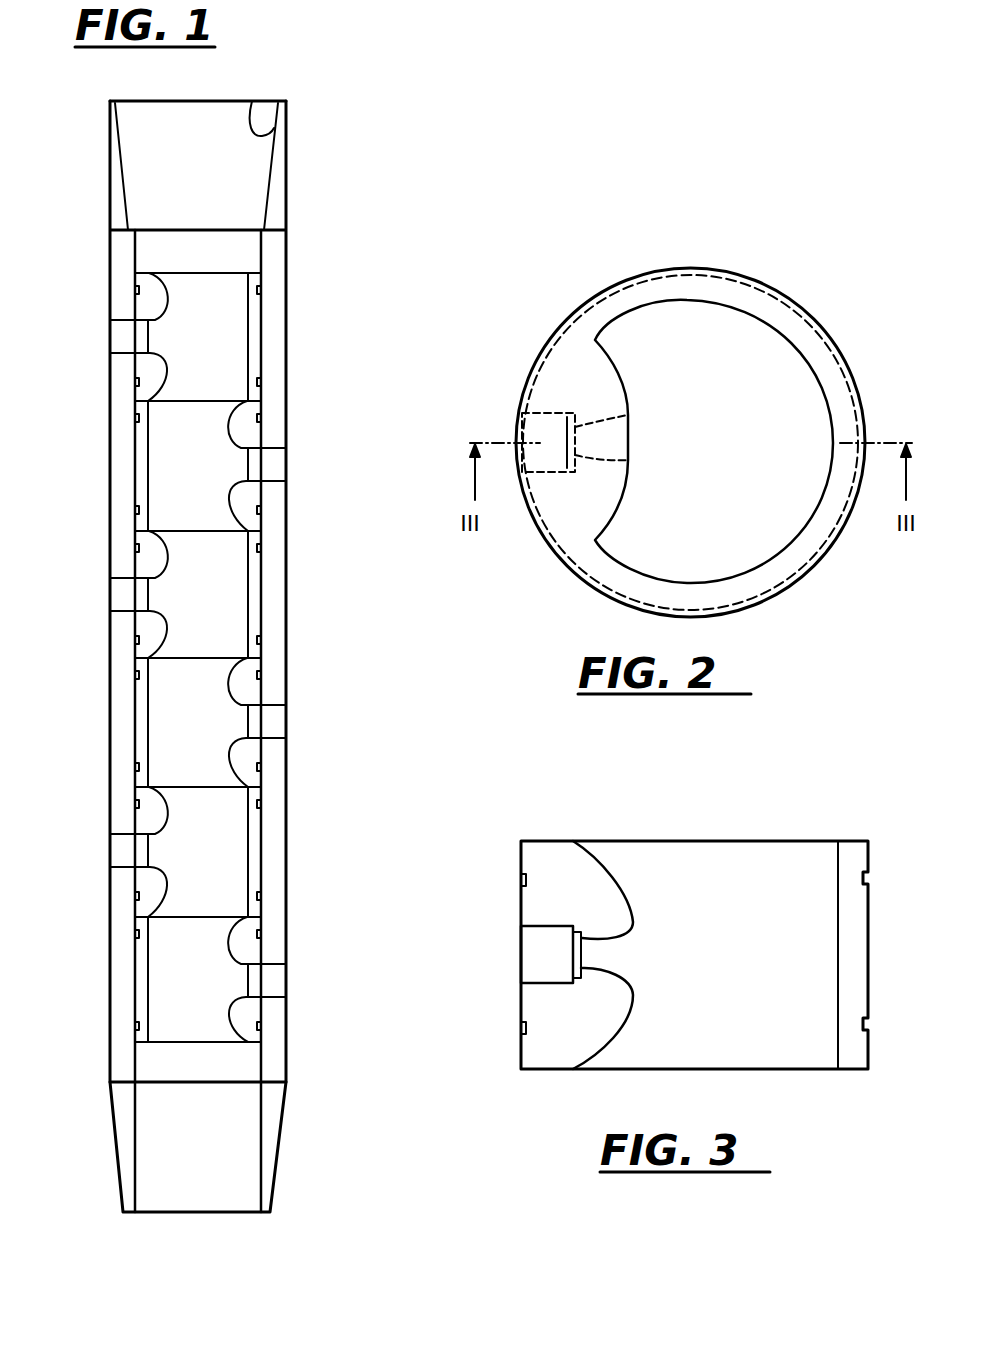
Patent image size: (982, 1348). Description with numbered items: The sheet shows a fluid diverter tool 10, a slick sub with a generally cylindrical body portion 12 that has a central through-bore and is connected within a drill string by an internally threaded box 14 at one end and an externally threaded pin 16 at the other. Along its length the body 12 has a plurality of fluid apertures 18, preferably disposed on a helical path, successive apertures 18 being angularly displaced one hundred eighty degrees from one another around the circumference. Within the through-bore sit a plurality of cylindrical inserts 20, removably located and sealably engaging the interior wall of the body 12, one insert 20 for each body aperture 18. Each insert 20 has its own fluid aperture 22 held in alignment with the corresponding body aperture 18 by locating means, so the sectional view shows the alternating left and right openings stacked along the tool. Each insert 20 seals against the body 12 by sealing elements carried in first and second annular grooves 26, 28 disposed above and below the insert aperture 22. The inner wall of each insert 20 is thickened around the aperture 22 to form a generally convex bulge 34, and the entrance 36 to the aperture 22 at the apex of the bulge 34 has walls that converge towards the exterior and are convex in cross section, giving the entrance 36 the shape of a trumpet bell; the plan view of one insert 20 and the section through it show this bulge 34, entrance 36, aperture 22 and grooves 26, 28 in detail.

In FIG. 1, the fluid diverter tool 10 is at (236, 622).
In FIG. 1, the body portion 12 is at (286, 367).
In FIG. 1, the internally threaded box 14 is at (252, 101).
In FIG. 1, the externally threaded pin 16 is at (274, 1165).
In FIG. 1, the fluid apertures 18 is at (122, 320).
In FIG. 1, the cylindrical inserts 20 is at (256, 323).
In FIG. 2, the cylindrical inserts 20 is at (773, 274).
In FIG. 1, the insert fluid aperture 22 is at (140, 355).
In FIG. 2, the insert fluid aperture 22 is at (515, 428).
In FIG. 3, the insert fluid aperture 22 is at (530, 930).
In FIG. 1, the first annular groove 26 is at (261, 290).
In FIG. 2, the first annular groove 26 is at (813, 558).
In FIG. 3, the first annular groove 26 is at (518, 880).
In FIG. 1, the second annular groove 28 is at (261, 382).
In FIG. 3, the second annular groove 28 is at (518, 1028).
In FIG. 1, the convex bulge 34 is at (153, 310).
In FIG. 2, the convex bulge 34 is at (607, 497).
In FIG. 3, the convex bulge 34 is at (612, 908).
In FIG. 1, the entrance 36 is at (155, 340).
In FIG. 2, the entrance 36 is at (623, 432).
In FIG. 3, the entrance 36 is at (622, 957).